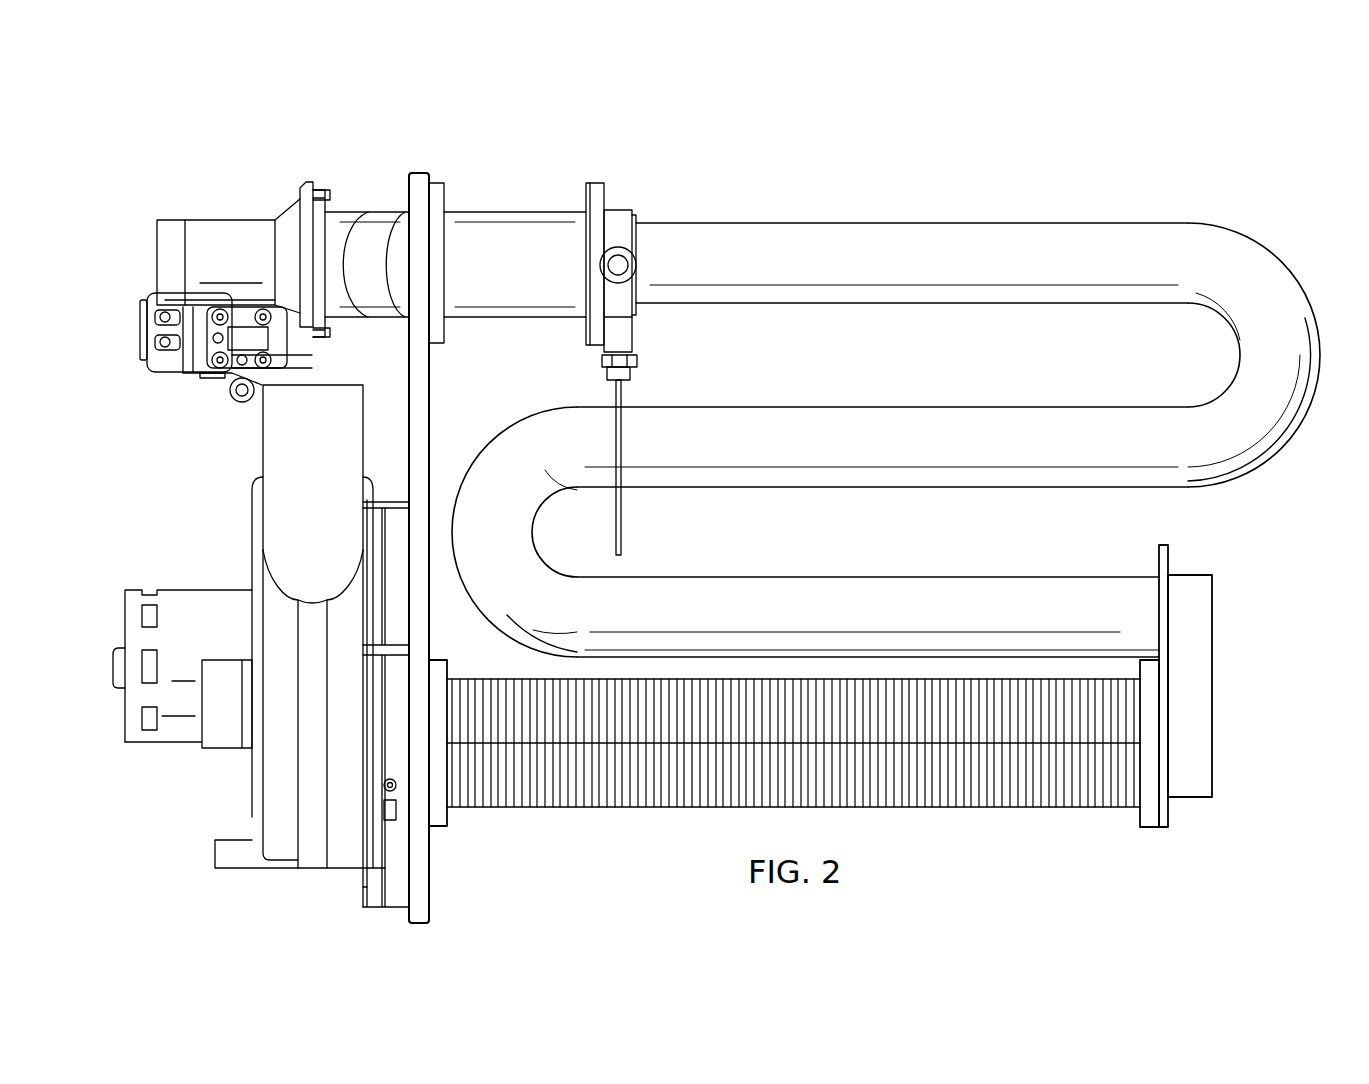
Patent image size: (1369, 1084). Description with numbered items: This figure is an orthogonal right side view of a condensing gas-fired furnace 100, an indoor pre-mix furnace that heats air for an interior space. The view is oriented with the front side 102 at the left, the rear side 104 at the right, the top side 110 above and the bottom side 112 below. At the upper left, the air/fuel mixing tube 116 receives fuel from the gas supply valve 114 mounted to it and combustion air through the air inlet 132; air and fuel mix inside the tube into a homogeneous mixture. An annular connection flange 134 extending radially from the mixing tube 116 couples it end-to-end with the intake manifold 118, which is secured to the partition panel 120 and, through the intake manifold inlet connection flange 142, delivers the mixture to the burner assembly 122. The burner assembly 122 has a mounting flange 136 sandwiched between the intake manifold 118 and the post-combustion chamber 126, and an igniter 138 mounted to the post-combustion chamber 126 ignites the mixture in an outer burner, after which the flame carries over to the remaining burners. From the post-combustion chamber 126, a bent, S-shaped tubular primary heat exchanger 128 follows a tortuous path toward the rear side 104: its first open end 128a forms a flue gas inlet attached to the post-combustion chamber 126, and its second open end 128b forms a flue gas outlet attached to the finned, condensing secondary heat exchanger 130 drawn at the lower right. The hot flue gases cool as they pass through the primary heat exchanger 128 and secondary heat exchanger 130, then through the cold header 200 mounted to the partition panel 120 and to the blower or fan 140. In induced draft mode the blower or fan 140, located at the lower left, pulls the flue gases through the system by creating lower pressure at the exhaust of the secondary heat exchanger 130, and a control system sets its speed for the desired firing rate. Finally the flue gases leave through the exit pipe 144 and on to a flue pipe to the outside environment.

The condensing gas-fired furnace 100 is at (1199, 152).
The front side 102 is at (139, 540).
The rear side 104 is at (1288, 605).
The top side 110 is at (1005, 190).
The bottom side 112 is at (975, 836).
The gas supply valve 114 is at (202, 380).
The air/fuel mixing tube 116 is at (237, 219).
The intake manifold 118 is at (386, 211).
The partition panel 120 is at (410, 365).
The burner assembly 122 is at (616, 187).
The post-combustion chamber 126 is at (622, 208).
The primary heat exchanger 128 is at (886, 414).
The first open end 128a is at (645, 223).
The second open end 128b is at (1128, 580).
The secondary heat exchanger 130 is at (1215, 685).
The air inlet 132 is at (140, 259).
The connection flange 134 is at (305, 186).
The mounting flange 136 is at (600, 183).
The igniter 138 is at (637, 338).
The blower or fan 140 is at (272, 780).
The intake manifold inlet connection flange 142 is at (328, 200).
The exit pipe 144 is at (262, 455).
The cold header 200 is at (361, 893).